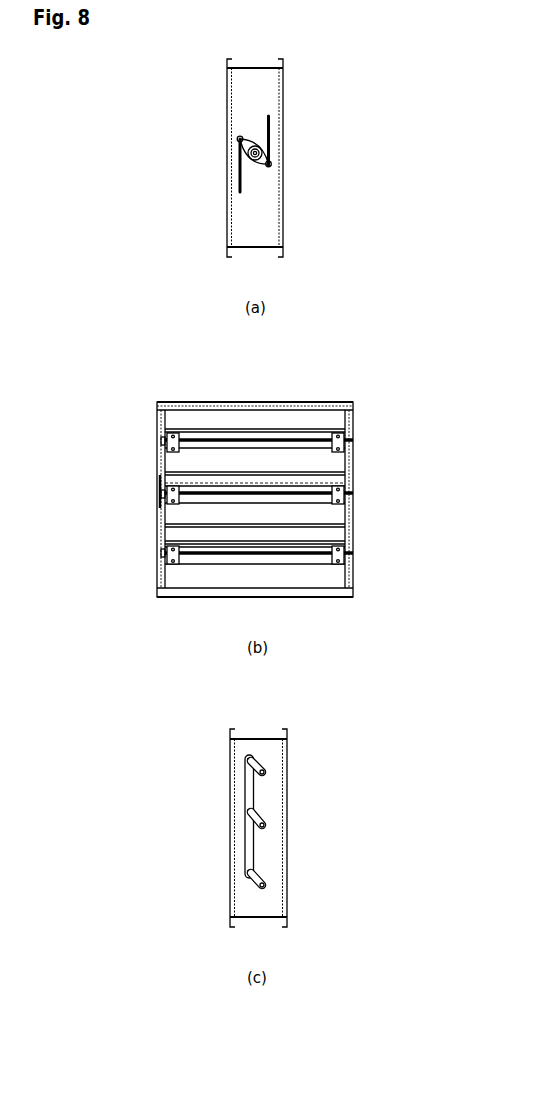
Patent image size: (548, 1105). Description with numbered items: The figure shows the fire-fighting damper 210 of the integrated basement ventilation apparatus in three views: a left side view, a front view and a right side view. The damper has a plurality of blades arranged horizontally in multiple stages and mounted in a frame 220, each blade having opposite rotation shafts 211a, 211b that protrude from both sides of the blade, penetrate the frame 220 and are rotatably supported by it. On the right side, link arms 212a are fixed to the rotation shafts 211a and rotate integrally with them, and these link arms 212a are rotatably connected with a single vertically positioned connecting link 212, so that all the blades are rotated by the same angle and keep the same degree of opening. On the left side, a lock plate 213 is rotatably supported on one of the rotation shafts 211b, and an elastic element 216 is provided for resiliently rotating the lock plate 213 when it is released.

The fire-fighting damper 210 is at (203, 153).
The frame 220 is at (227, 93).
The rotation shaft 211a is at (346, 495).
The rotation shaft 211b is at (253, 141).
The connecting link 212 is at (248, 843).
The link arm 212a is at (264, 759).
The lock plate 213 is at (259, 167).
The elastic element 216 is at (272, 131).